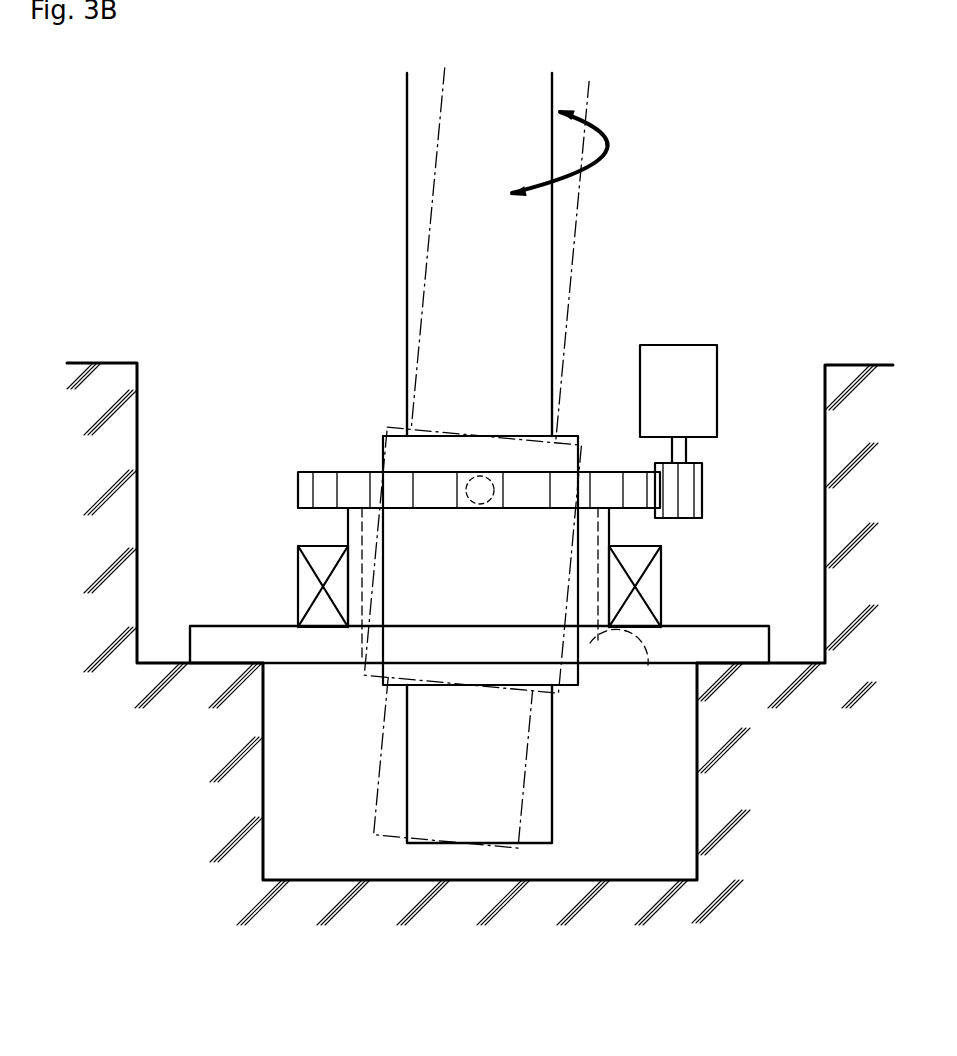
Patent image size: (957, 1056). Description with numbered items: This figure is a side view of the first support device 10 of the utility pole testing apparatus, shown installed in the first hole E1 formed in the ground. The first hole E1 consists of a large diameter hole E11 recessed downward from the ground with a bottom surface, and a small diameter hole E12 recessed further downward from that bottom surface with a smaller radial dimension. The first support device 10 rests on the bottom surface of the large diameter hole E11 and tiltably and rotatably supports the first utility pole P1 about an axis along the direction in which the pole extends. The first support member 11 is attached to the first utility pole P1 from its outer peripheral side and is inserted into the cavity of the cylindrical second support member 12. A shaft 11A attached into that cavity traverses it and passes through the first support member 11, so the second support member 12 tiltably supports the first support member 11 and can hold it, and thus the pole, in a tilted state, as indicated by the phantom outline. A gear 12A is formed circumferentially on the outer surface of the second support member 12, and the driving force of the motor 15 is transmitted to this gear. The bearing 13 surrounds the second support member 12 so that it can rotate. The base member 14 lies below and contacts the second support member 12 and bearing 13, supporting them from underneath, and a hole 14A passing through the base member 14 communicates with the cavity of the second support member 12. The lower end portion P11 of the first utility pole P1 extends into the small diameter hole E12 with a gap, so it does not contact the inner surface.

The first support device 10 is at (292, 380).
The first support member 11 is at (383, 441).
The shaft 11A is at (488, 476).
The second support member 12 is at (348, 524).
The gear 12A is at (298, 490).
The bearing 13 is at (298, 570).
The base member 14 is at (210, 626).
The hole 14A is at (648, 665).
The motor 15 is at (678, 345).
The first utility pole P1 is at (407, 183).
The lower end portion P11 is at (552, 800).
The first hole E1 is at (781, 362).
The large diameter hole E11 is at (137, 405).
The small diameter hole E12 is at (263, 783).